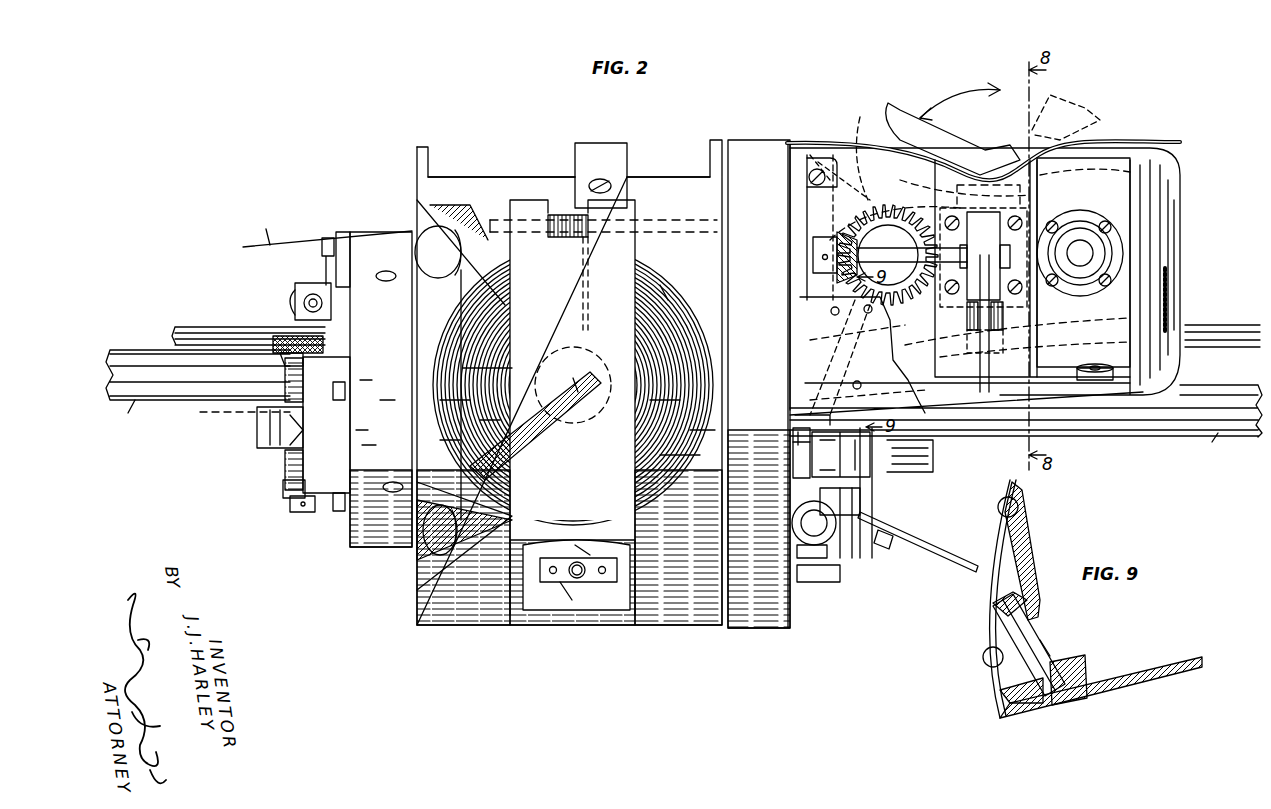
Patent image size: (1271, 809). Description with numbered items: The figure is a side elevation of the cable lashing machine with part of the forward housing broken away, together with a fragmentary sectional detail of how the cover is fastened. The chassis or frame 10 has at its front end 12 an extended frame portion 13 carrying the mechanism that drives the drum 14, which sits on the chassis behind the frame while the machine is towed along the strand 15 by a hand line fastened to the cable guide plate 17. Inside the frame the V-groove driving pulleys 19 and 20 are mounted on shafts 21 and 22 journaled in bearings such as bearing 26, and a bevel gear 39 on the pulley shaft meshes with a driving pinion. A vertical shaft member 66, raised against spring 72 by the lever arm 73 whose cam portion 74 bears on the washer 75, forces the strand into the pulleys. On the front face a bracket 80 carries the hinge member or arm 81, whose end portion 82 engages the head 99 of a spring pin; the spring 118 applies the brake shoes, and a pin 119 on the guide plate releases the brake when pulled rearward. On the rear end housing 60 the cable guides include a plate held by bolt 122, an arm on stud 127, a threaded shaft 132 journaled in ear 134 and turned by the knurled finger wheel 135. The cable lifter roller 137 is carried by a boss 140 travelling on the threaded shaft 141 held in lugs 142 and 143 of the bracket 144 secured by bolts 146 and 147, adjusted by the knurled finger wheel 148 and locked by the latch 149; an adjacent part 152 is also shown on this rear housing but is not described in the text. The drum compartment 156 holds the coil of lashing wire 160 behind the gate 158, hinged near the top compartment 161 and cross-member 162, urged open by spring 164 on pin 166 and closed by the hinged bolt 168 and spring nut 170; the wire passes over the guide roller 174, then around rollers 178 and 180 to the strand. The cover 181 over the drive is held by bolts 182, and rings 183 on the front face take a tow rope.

In FIG. 2, the chassis or frame 10 is at (740, 150).
In FIG. 9, the chassis or frame 10 is at (1125, 688).
In FIG. 2, the front end of the chassis 12 is at (792, 143).
In FIG. 2, the extended frame portion 13 is at (1150, 145).
In FIG. 2, the drum 14 is at (460, 618).
In FIG. 2, the strand 15 is at (188, 327).
In FIG. 2, the cable guide plate 17 is at (938, 545).
In FIG. 2, the V-groove driving pulley 19 is at (841, 256).
In FIG. 2, the V-groove driving pulley 20 is at (1095, 175).
In FIG. 2, the pulley shaft 21 is at (880, 240).
In FIG. 2, the pulley shaft 22 is at (1090, 250).
In FIG. 2, the bearing 26 is at (1115, 267).
In FIG. 2, the bevel gear 39 is at (862, 355).
In FIG. 2, the rear end housing 60 is at (368, 547).
In FIG. 2, the vertical shaft member 66 is at (945, 205).
In FIG. 2, the spring 72 is at (1030, 325).
In FIG. 2, the lever arm 73 is at (892, 115).
In FIG. 2, the cam portion 74 is at (1022, 185).
In FIG. 2, the washer 75 is at (1042, 192).
In FIG. 2, the bracket 80 is at (793, 438).
In FIG. 2, the hinge member or arm 81 is at (930, 470).
In FIG. 2, the end portion of the arm 82 is at (875, 478).
In FIG. 2, the head of the pin 99 is at (862, 508).
In FIG. 2, the spring 118 is at (843, 158).
In FIG. 2, the pin 119 is at (889, 546).
In FIG. 2, the bolt 122 is at (340, 232).
In FIG. 2, the stud 127 is at (322, 243).
In FIG. 2, the shaft 132 is at (323, 300).
In FIG. 2, the lug or ear 134 is at (308, 283).
In FIG. 2, the knurled finger wheel 135 is at (293, 294).
In FIG. 2, the cable lifter roller 137 is at (233, 412).
In FIG. 2, the internally threaded boss 140 is at (275, 425).
In FIG. 2, the threaded shaft 141 is at (284, 462).
In FIG. 2, the projecting lug 142 is at (284, 361).
In FIG. 2, the projecting lug 143 is at (283, 490).
In FIG. 2, the bracket 144 is at (302, 512).
In FIG. 2, the bolt 146 is at (334, 392).
In FIG. 2, the bolt 147 is at (334, 502).
In FIG. 2, the knurled finger wheel 148 is at (285, 335).
In FIG. 2, the latch member or bolt 149 is at (290, 433).
In FIG. 2, the slide block 152 is at (296, 428).
In FIG. 2, the compartment 156 is at (662, 296).
In FIG. 2, the gate 158 is at (622, 278).
In FIG. 2, the coil of lashing wire 160 is at (682, 330).
In FIG. 2, the top compartment 161 is at (500, 177).
In FIG. 2, the cross-member 162 is at (598, 147).
In FIG. 2, the spring 164 is at (546, 232).
In FIG. 2, the pin 166 is at (656, 219).
In FIG. 2, the hinged bolt 168 is at (577, 580).
In FIG. 2, the threaded spring nut 170 is at (558, 585).
In FIG. 2, the guide roller 174 is at (565, 410).
In FIG. 2, the guide roller 178 is at (430, 545).
In FIG. 2, the roller 180 is at (438, 238).
In FIG. 2, the cover 181 is at (1055, 150).
In FIG. 9, the cover 181 is at (996, 618).
In FIG. 9, the bolt 182 is at (1040, 656).
In FIG. 2, the ring 183 is at (832, 537).